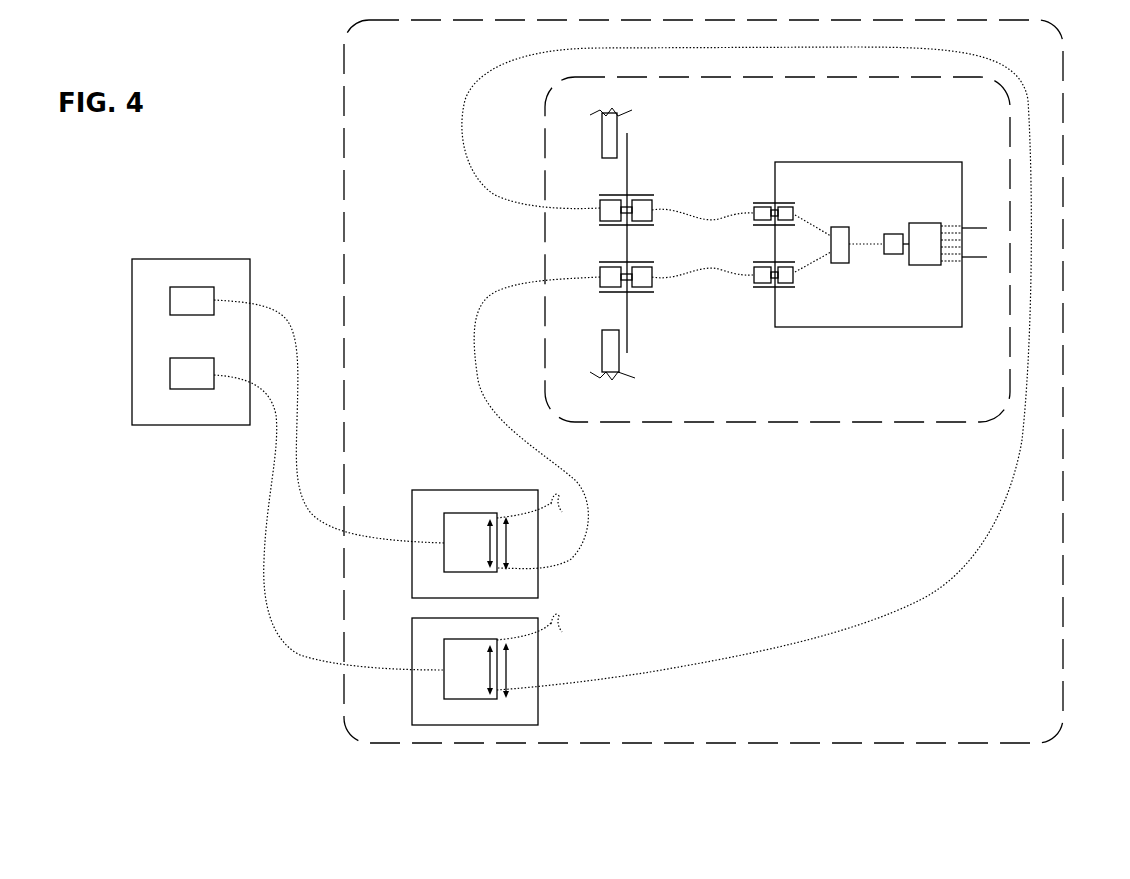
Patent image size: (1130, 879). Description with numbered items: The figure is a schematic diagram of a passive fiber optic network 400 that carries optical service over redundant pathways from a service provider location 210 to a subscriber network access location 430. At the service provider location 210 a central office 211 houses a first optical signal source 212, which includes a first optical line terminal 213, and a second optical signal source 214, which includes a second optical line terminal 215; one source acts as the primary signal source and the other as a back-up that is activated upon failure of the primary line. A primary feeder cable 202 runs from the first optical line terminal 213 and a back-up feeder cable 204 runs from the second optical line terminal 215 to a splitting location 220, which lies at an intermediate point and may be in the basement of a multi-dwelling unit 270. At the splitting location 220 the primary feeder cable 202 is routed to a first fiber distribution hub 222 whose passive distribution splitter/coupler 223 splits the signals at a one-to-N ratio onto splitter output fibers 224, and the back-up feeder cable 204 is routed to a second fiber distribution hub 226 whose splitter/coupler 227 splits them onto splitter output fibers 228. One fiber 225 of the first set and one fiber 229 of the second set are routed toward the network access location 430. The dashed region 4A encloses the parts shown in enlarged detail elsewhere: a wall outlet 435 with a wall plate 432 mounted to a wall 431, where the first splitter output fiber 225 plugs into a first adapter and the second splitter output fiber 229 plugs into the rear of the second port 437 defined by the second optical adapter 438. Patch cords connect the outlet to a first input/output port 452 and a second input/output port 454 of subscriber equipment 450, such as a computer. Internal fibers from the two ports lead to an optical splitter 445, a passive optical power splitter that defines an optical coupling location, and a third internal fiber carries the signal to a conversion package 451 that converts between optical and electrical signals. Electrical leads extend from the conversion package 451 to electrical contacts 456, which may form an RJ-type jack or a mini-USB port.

The passive fiber optic network 400 is at (652, 417).
The multi-dwelling unit 270 is at (753, 738).
The detail view region 4A is at (768, 420).
The service provider location 210 is at (155, 329).
The central office 211 is at (226, 257).
The first optical signal source 212 is at (162, 232).
The first optical line terminal 213 is at (178, 290).
The second optical signal source 214 is at (178, 434).
The second optical line terminal 215 is at (193, 386).
The primary feeder cable 202 is at (290, 320).
The back-up feeder cable 204 is at (270, 610).
The splitting location 220 is at (468, 618).
The first fiber distribution hub 222 is at (515, 511).
The first distribution splitter/coupler 223 is at (432, 513).
The splitter output fibers 224 is at (497, 544).
The first splitter output fiber 225 is at (480, 400).
The second fiber distribution hub 226 is at (499, 713).
The second distribution splitter/coupler 227 is at (432, 707).
The splitter output fibers 228 is at (497, 672).
The second splitter output fiber 229 is at (465, 163).
The subscriber network access location 430 is at (912, 300).
The wall 431 is at (608, 353).
The wall plate 432 is at (606, 254).
The wall outlet 435 is at (622, 234).
The second port 437 is at (608, 290).
The second optical adapter 438 is at (610, 192).
The optical splitter 445 is at (833, 263).
The subscriber equipment 450 is at (849, 300).
The conversion package 451 is at (929, 240).
The first input/output port 452 is at (770, 195).
The second input/output port 454 is at (770, 289).
The electrical contacts 456 is at (958, 225).